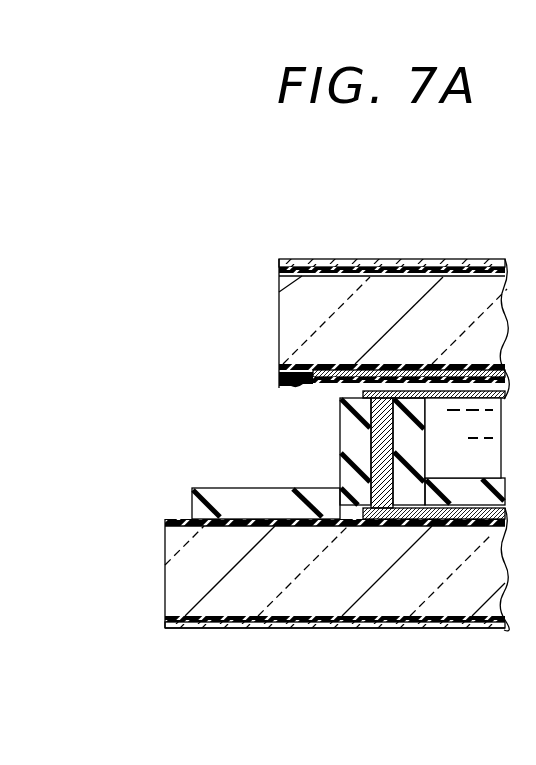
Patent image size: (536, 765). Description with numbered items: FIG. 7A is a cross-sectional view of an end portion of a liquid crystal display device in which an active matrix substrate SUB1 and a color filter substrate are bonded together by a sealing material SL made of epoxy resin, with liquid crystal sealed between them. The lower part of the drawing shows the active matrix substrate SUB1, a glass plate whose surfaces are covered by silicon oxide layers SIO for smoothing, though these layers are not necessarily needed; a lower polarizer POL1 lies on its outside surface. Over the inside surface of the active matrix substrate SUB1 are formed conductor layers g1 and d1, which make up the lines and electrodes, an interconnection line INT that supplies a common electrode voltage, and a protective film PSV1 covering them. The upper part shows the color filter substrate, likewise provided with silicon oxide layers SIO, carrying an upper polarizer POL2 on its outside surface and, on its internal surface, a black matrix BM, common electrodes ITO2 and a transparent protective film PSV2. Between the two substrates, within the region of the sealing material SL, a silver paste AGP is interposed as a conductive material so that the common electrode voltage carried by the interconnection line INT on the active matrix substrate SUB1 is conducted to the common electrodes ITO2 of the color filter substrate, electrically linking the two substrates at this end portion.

The upper polarizer POL2 is at (406, 245).
The silicon oxide layer SIO is at (487, 267).
The black matrix BM is at (507, 376).
The transparent protective film PSV2 is at (279, 378).
The common electrode ITO2 is at (360, 395).
The silver paste AGP is at (368, 451).
The protective film PSV1 is at (192, 504).
The sealing material SL is at (426, 427).
The conductor layer g1 is at (429, 518).
The conductor layer d1 is at (505, 518).
The active matrix substrate SUB1 is at (172, 575).
The interconnection line INT is at (374, 518).
The lower polarizer POL1 is at (193, 633).